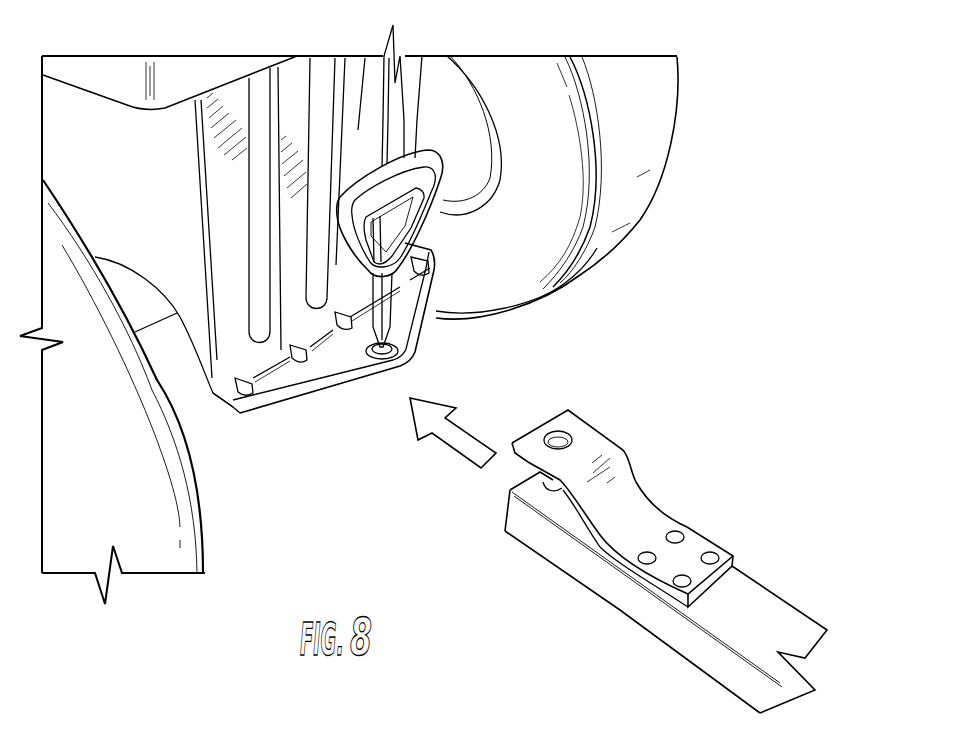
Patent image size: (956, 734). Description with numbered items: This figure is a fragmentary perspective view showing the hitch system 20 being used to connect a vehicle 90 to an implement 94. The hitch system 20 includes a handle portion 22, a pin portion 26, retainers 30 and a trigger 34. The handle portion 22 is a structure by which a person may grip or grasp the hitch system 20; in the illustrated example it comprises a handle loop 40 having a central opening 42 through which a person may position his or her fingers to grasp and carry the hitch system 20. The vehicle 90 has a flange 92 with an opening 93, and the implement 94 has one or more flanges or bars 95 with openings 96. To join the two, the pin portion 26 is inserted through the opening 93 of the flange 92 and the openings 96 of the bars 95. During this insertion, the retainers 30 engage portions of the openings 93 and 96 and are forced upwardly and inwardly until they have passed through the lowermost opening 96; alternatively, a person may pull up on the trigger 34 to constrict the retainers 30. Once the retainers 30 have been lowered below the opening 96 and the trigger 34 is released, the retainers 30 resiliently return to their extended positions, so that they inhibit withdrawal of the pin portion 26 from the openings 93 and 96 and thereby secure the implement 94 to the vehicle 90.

The hitch system 20 is at (428, 157).
The handle portion 22 is at (341, 196).
The pin portion 26 is at (367, 303).
The retainers 30 is at (368, 343).
The trigger 34 is at (397, 210).
The handle loop 40 is at (418, 216).
The central opening 42 is at (390, 237).
The vehicle 90 is at (200, 340).
The flange 92 is at (317, 383).
The opening 93 is at (388, 357).
The implement 94 is at (752, 595).
The flanges or bars 95 is at (596, 438).
The openings 96 is at (562, 432).